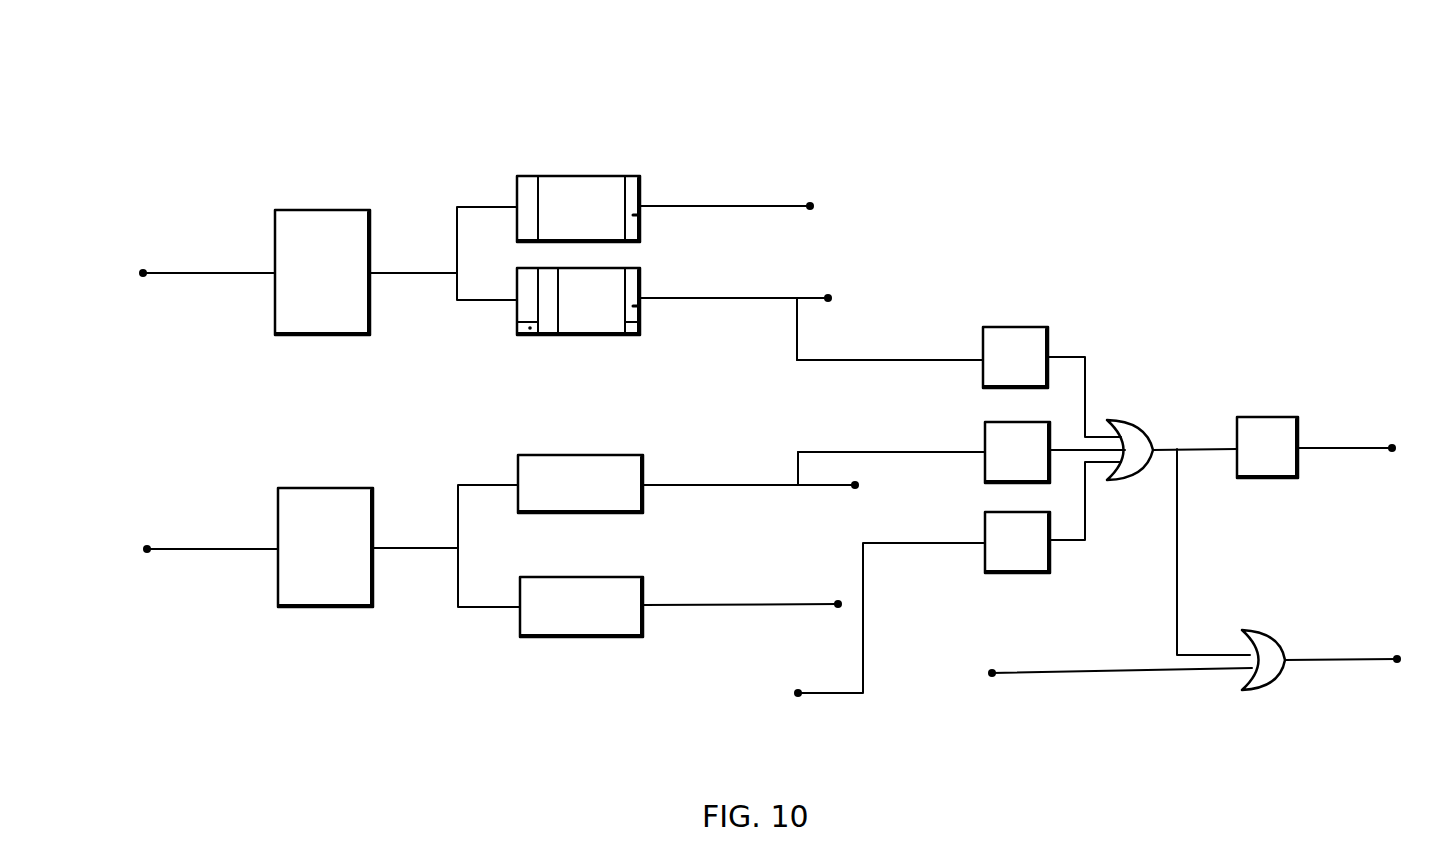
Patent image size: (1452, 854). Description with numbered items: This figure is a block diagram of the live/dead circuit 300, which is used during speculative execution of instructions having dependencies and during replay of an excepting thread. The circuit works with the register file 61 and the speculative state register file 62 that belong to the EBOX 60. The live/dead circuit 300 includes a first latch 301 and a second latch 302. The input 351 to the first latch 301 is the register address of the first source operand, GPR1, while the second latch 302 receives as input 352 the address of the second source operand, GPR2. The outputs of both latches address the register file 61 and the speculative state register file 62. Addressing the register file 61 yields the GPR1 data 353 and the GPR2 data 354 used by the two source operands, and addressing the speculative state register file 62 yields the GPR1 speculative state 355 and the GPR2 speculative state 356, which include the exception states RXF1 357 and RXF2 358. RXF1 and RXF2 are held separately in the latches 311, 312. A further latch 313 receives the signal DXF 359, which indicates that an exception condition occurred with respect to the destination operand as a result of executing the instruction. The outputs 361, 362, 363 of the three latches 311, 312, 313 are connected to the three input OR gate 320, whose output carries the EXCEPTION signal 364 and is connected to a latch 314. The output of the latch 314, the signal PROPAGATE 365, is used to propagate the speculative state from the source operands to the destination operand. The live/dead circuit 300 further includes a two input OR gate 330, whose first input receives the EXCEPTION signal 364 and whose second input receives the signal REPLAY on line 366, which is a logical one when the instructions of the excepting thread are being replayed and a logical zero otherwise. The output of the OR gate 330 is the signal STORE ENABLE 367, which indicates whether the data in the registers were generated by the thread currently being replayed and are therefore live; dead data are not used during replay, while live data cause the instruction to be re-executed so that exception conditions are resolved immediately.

The EBOX 60 is at (355, 162).
The live/dead circuit 300 is at (884, 194).
The first latch 301 is at (290, 210).
The second latch 302 is at (302, 488).
The register file 61 is at (555, 176).
The speculative state register file 62 is at (608, 268).
The latch 311 is at (1000, 327).
The latch 312 is at (1003, 422).
The latch 313 is at (1020, 512).
The latch 314 is at (1265, 417).
The three input OR gate 320 is at (1118, 415).
The two input OR gate 330 is at (1288, 625).
The input 351 is at (207, 298).
The input 352 is at (210, 576).
The GPR1 data 353 is at (772, 204).
The GPR2 data 354 is at (782, 606).
The GPR1 speculative state 355 is at (805, 298).
The GPR2 speculative state 356 is at (825, 487).
The exception state RXF1 357 is at (942, 360).
The exception state RXF2 358 is at (955, 450).
The signal DXF 359 is at (958, 546).
The output 361 is at (1088, 400).
The output 362 is at (1066, 453).
The output 363 is at (1105, 493).
The EXCEPTION signal 364 is at (1178, 507).
The signal PROPAGATE 365 is at (1328, 450).
The line carrying signal REPLAY 366 is at (1090, 675).
The signal STORE ENABLE 367 is at (1286, 680).